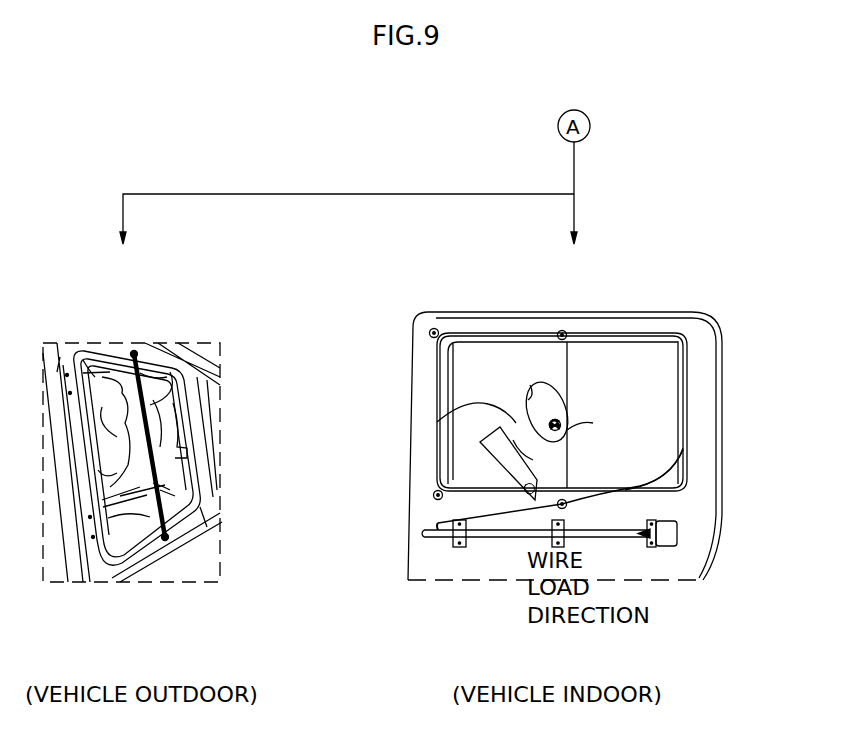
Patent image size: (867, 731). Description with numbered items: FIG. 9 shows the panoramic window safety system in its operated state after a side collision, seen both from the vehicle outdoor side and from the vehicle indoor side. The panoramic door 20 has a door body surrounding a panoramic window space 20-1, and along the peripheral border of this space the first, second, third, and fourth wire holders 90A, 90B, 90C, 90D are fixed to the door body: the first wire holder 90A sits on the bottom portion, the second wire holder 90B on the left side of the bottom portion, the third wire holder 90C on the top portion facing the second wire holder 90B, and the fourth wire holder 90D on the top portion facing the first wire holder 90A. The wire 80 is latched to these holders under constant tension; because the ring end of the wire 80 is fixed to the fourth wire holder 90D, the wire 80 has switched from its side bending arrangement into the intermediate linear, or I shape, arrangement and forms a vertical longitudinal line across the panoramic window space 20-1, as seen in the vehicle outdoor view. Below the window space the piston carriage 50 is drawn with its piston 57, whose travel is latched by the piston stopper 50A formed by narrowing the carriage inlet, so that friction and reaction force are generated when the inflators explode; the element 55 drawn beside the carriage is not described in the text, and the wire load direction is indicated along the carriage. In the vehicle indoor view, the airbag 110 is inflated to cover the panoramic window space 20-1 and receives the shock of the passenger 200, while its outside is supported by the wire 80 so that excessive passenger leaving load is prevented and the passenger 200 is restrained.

The panoramic door 20 is at (700, 372).
The panoramic window space 20-1 is at (118, 537).
The piston carriage 50 is at (487, 548).
The piston stopper 50A is at (678, 535).
The wire 55 is at (438, 521).
The piston 57 is at (672, 522).
The wire 80 is at (165, 385).
The first wire holder 90A is at (567, 505).
The second wire holder 90B is at (434, 493).
The third wire holder 90C is at (432, 329).
The fourth wire holder 90D is at (561, 331).
The airbag 110 is at (98, 388).
The passenger 200 is at (437, 422).